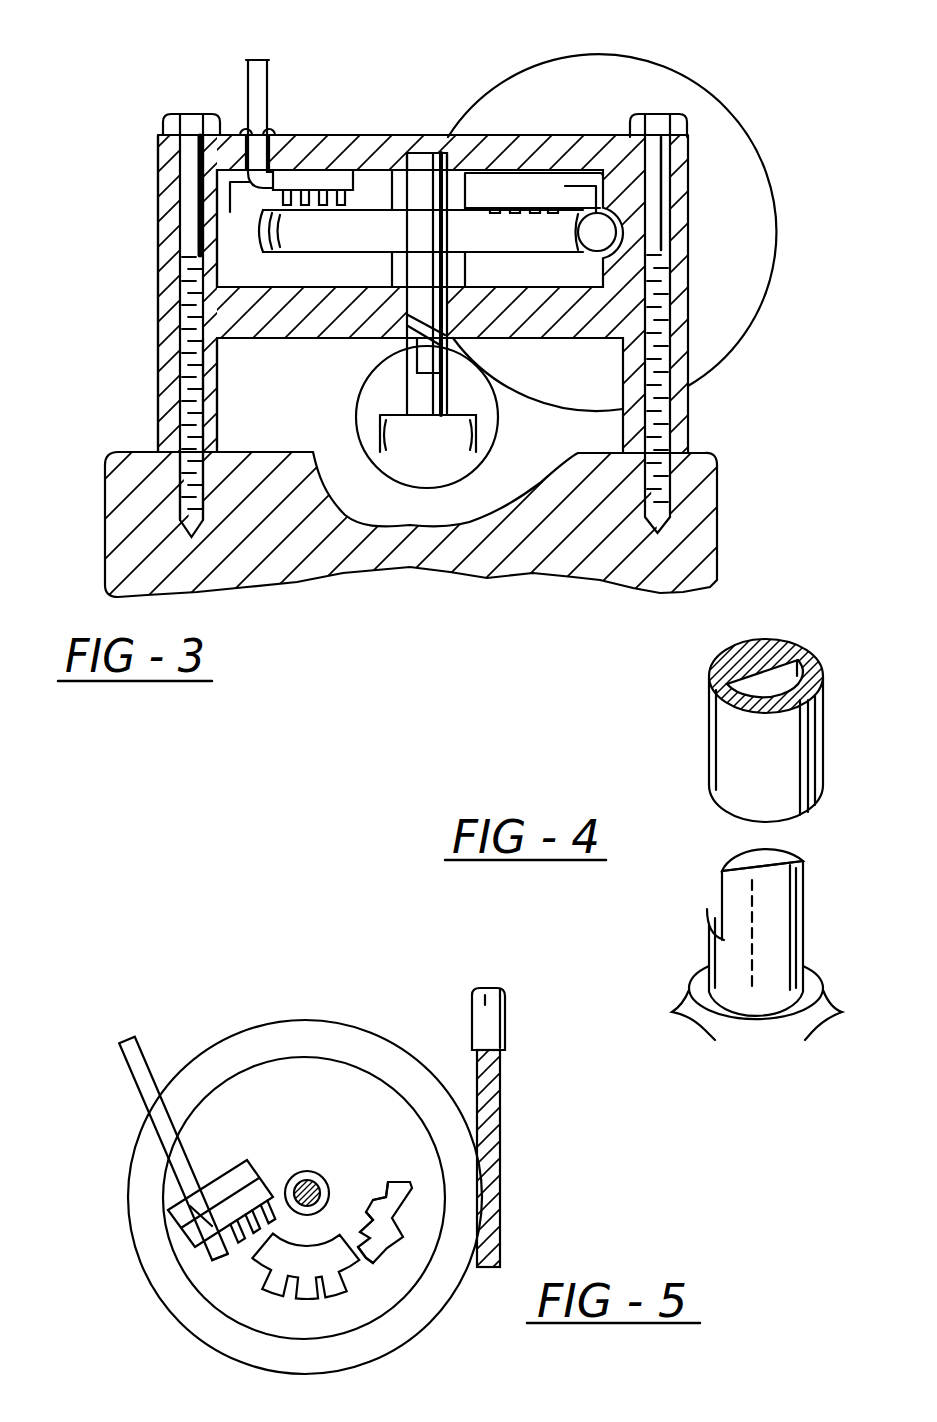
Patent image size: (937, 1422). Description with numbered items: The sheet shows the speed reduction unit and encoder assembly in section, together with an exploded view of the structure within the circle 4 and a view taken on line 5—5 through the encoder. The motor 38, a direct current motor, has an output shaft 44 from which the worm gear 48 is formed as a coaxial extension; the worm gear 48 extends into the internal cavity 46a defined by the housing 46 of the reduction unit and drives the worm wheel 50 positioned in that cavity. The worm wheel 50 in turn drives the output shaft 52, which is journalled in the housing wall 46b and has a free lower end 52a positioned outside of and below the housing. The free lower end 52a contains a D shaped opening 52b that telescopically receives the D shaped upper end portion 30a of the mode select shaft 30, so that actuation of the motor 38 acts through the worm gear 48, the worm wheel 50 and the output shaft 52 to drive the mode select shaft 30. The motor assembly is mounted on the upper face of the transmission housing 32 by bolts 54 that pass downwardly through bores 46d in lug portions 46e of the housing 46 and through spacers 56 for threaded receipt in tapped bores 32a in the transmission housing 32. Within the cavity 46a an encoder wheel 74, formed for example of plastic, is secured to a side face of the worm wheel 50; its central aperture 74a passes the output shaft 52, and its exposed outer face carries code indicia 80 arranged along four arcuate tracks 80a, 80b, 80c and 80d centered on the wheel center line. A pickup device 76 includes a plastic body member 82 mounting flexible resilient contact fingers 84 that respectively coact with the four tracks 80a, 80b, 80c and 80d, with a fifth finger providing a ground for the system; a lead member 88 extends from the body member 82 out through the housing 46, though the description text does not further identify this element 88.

In FIG. 3, the circle 4 is at (357, 420).
In FIG. 3, the line 5— 5 is at (409, 209).
In FIG. 4, the mode select shaft 30 is at (722, 948).
In FIG. 4, the D shaped upper end portion 30a is at (802, 905).
In FIG. 3, the transmission housing 32 is at (703, 452).
In FIG. 4, the transmission housing 32 is at (828, 1002).
In FIG. 3, the tapped bores 32a is at (190, 490).
In FIG. 3, the motor 38 is at (705, 96).
In FIG. 5, the output shaft 44 is at (506, 1022).
In FIG. 3, the housing 46 is at (393, 124).
In FIG. 3, the internal cavity 46a is at (222, 258).
In FIG. 3, the housing wall 46b is at (422, 133).
In FIG. 3, the bores 46d is at (188, 190).
In FIG. 3, the lug portions 46e is at (160, 312).
In FIG. 3, the worm gear 48 is at (603, 233).
In FIG. 5, the worm gear 48 is at (501, 1172).
In FIG. 3, the worm wheel 50 is at (347, 233).
In FIG. 5, the worm wheel 50 is at (385, 1358).
In FIG. 3, the output shaft 52 is at (412, 268).
In FIG. 5, the output shaft 52 is at (303, 1180).
In FIG. 3, the free lower end 52a is at (410, 358).
In FIG. 4, the free lower end 52a is at (725, 757).
In FIG. 4, the D shaped opening 52b is at (800, 670).
In FIG. 3, the bolts 54 is at (190, 112).
In FIG. 3, the spacers 56 is at (160, 361).
In FIG. 3, the encoder wheel 74 is at (515, 210).
In FIG. 5, the encoder wheel 74 is at (320, 1099).
In FIG. 5, the central aperture 74a is at (318, 1183).
In FIG. 5, the pickup device 76 is at (205, 1213).
In FIG. 5, the code indicia 80 is at (268, 1302).
In FIG. 5, the arcuate track 80a is at (403, 1187).
In FIG. 5, the arcuate track 80b is at (392, 1163).
In FIG. 5, the arcuate track 80c is at (365, 1207).
In FIG. 5, the arcuate track 80d is at (362, 1255).
In FIG. 3, the plastic body member 82 is at (320, 178).
In FIG. 5, the plastic body member 82 is at (238, 1165).
In FIG. 5, the contact fingers 84 is at (232, 1220).
In FIG. 3, the lever rod 88 is at (268, 100).
In FIG. 5, the lever rod 88 is at (150, 1090).